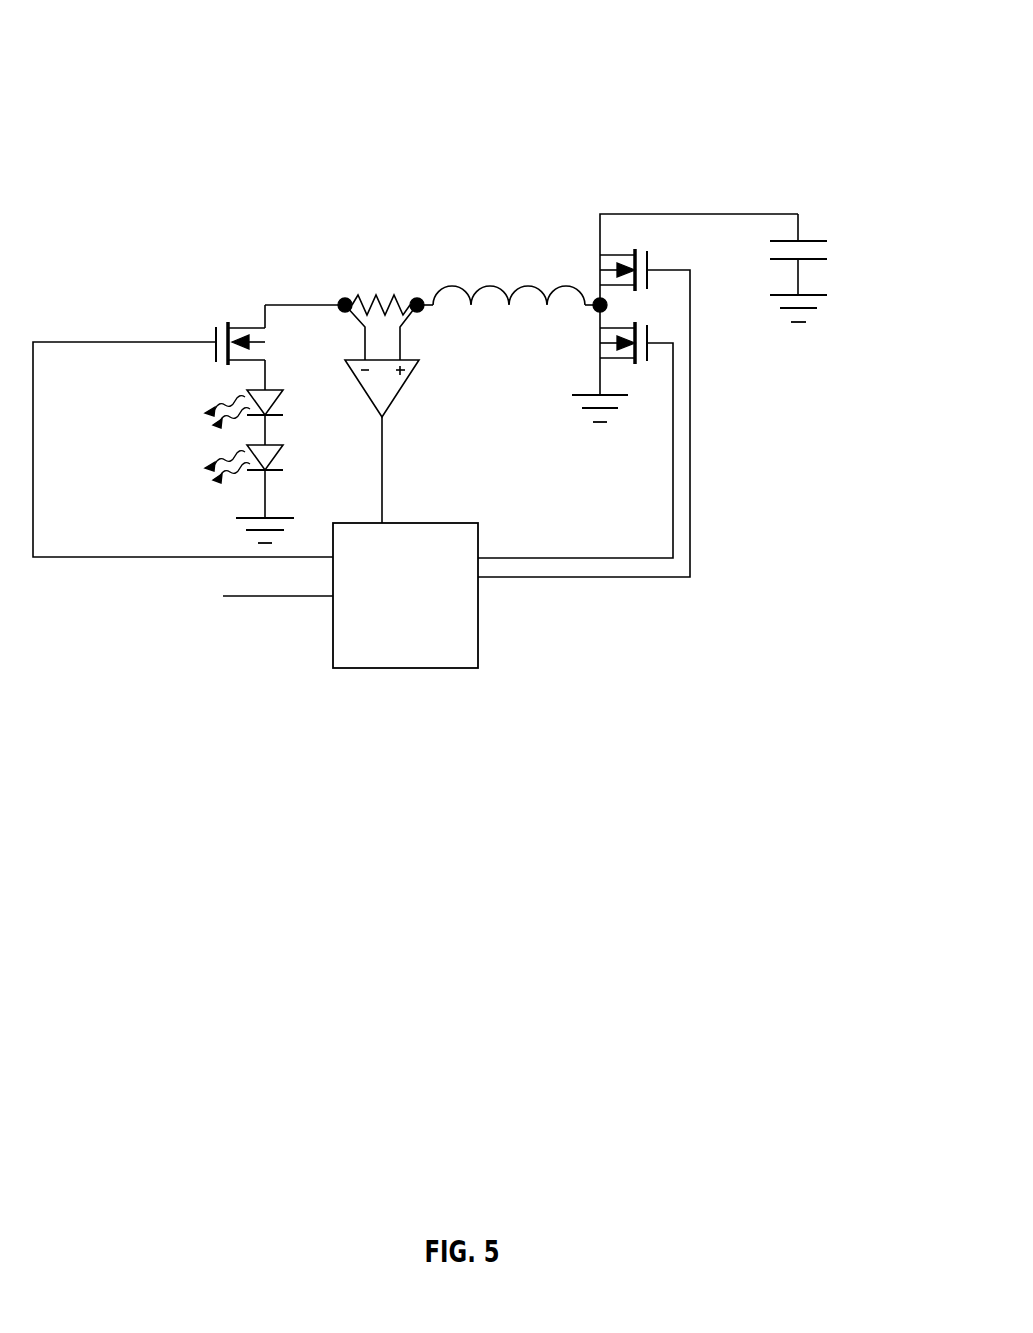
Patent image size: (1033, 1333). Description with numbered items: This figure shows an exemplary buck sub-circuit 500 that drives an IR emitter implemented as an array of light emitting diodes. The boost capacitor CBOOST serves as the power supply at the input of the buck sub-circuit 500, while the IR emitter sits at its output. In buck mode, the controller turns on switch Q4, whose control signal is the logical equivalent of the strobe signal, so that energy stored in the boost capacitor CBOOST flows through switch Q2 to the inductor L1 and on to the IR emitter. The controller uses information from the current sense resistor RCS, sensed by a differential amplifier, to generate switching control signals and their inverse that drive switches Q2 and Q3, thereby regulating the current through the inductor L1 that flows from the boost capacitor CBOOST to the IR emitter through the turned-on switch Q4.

The buck sub-circuit 500 is at (478, 19).
The switch Q2 is at (677, 259).
The switch Q3 is at (602, 363).
The switch Q4 is at (263, 347).
The inductor L1 is at (508, 281).
The current sense resistor RCS is at (381, 290).
The boost capacitor CBOOST is at (858, 268).